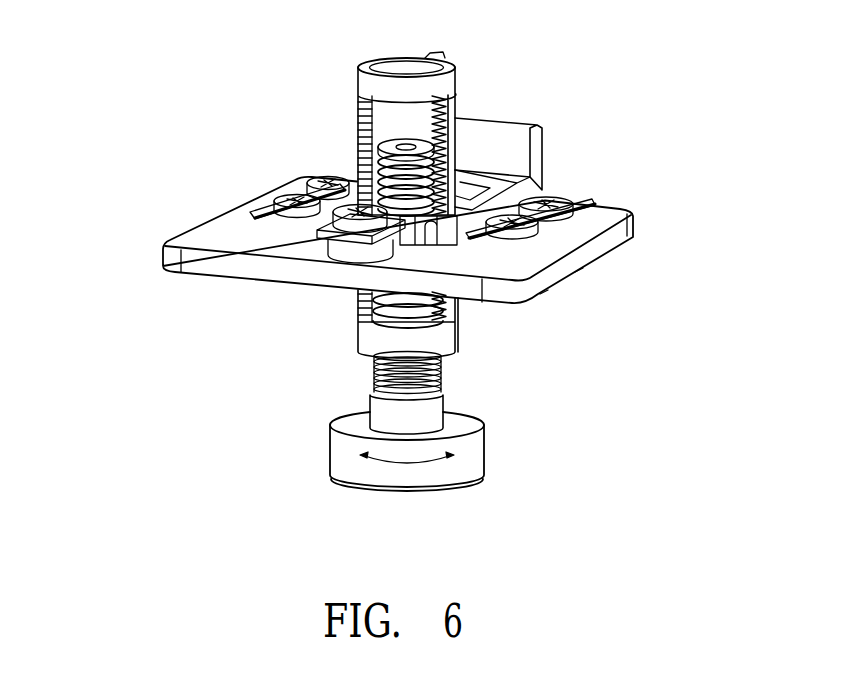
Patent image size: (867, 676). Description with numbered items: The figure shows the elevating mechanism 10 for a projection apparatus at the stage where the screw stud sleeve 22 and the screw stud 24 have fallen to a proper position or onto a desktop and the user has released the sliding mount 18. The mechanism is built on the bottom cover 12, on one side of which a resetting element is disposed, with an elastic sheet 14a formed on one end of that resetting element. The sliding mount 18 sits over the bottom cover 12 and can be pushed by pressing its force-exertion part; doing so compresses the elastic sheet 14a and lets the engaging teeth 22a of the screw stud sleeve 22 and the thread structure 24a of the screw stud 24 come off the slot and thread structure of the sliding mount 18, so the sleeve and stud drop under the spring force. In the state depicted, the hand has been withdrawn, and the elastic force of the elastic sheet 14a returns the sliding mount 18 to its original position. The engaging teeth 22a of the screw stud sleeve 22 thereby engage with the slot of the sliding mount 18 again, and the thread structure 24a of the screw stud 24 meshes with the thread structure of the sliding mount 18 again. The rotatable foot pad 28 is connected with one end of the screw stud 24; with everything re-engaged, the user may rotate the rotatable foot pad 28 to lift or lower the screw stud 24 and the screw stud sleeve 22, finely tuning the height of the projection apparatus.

The elevating mechanism 10 is at (101, 50).
The bottom cover 12 is at (590, 247).
The elastic sheet 14a is at (316, 226).
The sliding mount 18 is at (500, 118).
The screw stud sleeve 22 is at (458, 330).
The engaging teeth 22a is at (358, 131).
The screw stud 24 is at (447, 372).
The thread structure 24a is at (374, 163).
The rotatable foot pad 28 is at (357, 482).